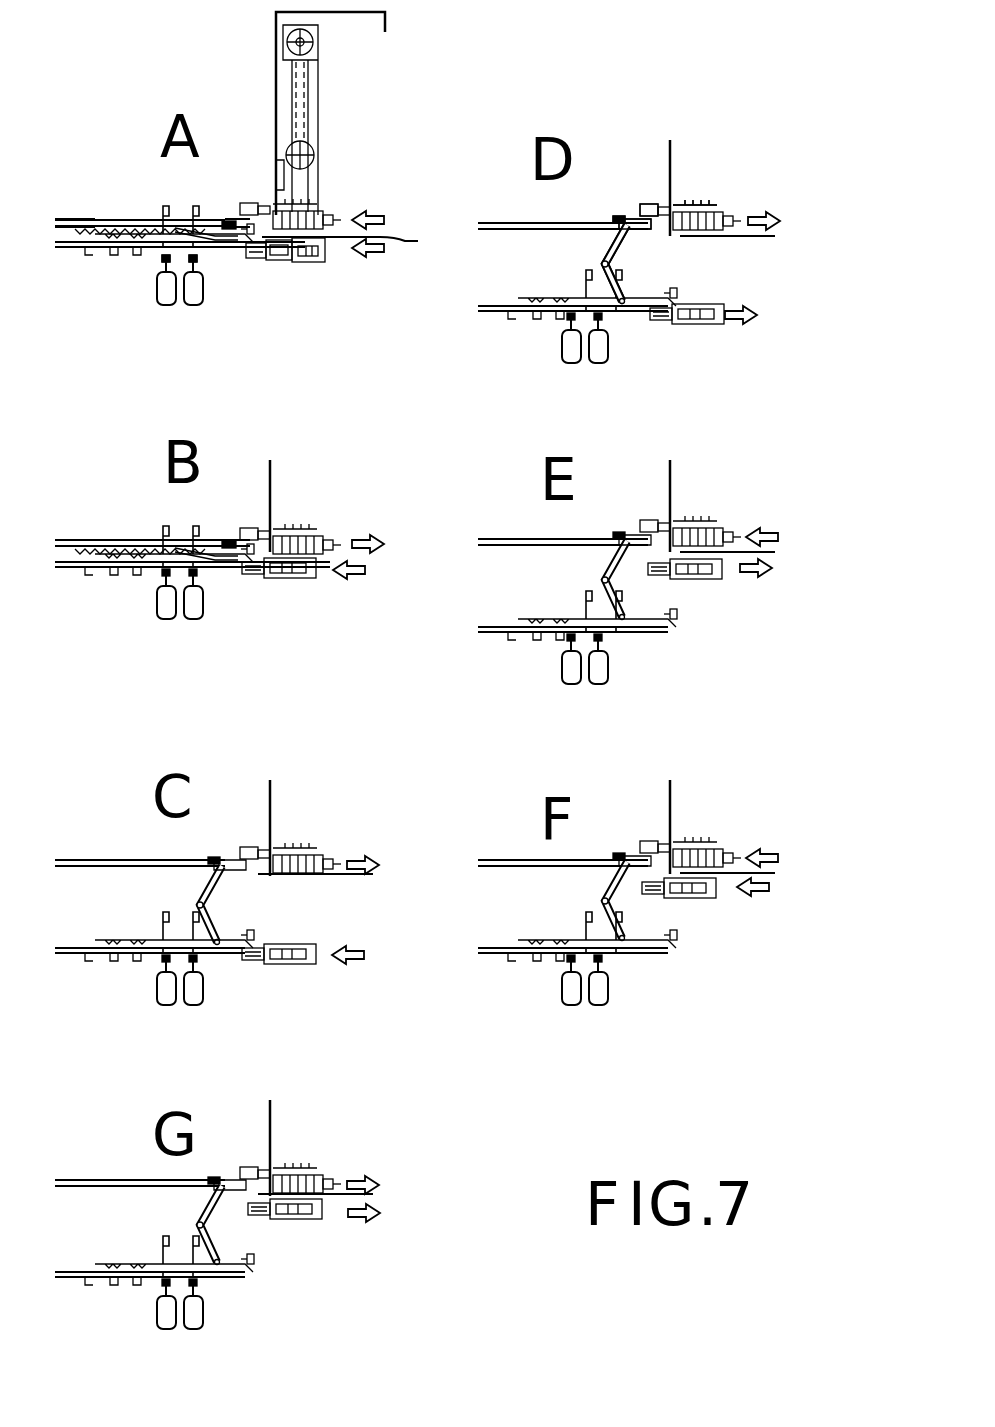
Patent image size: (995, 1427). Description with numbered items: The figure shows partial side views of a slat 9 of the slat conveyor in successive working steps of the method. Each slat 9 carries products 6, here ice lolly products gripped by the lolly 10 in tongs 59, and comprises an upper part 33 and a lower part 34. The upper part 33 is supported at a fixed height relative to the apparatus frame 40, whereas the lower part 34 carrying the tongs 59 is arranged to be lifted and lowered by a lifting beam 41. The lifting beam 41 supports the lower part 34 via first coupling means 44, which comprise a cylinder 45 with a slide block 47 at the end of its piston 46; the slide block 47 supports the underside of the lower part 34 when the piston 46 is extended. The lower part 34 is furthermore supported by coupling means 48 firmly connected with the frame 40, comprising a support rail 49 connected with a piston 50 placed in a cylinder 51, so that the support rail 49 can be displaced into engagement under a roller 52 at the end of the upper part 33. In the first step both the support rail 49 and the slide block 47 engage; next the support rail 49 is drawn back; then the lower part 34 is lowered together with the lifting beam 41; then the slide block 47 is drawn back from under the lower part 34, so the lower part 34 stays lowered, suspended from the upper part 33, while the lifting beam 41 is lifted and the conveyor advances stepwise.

The slat 9 is at (115, 196).
The upper part 33 is at (80, 218).
The lower part 34 is at (75, 243).
The lolly 10 is at (160, 258).
The products 6 is at (172, 285).
The tongs 59 is at (205, 217).
The apparatus frame 40 is at (276, 162).
The coupling means 48 is at (335, 200).
The lifting beam 41 is at (760, 288).
The first coupling means 44 is at (332, 258).
The slide block 47 is at (250, 260).
The piston 46 is at (272, 262).
The cylinder 45 is at (300, 263).
The roller 52 is at (656, 204).
The piston 50 is at (702, 205).
The cylinder 51 is at (725, 205).
The support rail 49 is at (675, 233).